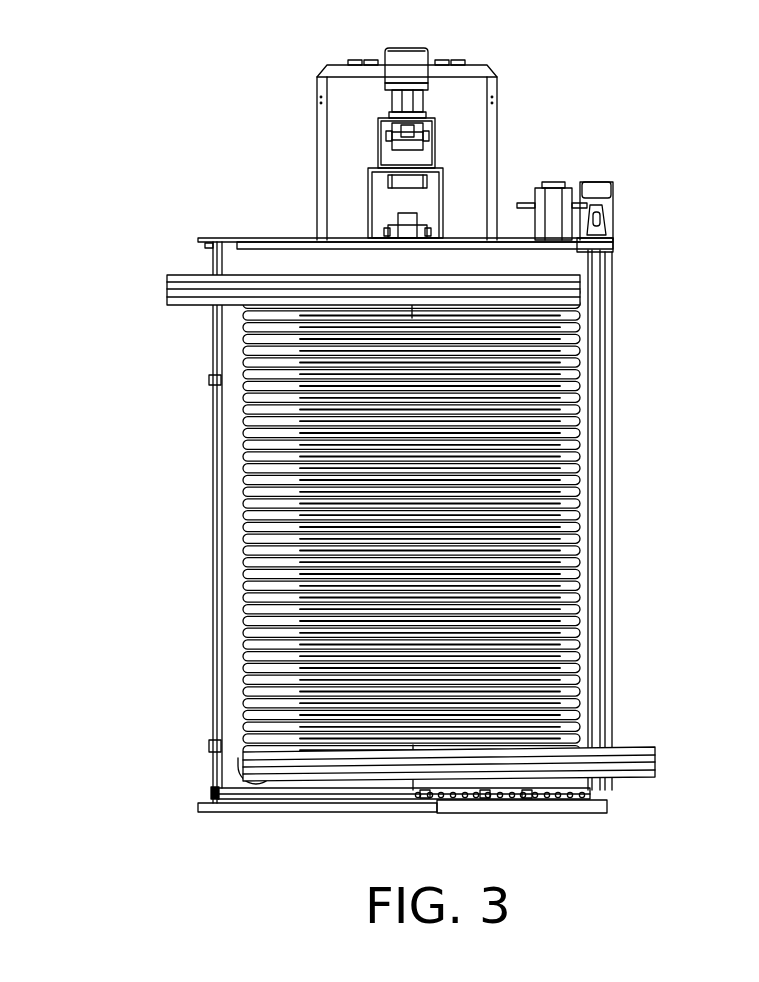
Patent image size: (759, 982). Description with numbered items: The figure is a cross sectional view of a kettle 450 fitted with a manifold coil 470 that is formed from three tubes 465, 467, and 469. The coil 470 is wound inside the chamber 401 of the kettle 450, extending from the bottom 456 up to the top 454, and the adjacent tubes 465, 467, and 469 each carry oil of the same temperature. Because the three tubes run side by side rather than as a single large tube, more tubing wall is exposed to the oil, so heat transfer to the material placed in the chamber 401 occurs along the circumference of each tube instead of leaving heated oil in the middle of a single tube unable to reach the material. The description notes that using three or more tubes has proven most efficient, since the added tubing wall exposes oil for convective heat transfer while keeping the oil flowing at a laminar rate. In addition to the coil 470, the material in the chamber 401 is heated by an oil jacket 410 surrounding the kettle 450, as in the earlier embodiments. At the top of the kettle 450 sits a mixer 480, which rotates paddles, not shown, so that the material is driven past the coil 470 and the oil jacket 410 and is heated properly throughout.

The chamber 401 is at (550, 268).
The oil jacket 410 is at (210, 633).
The kettle 450 is at (232, 208).
The top 454 is at (215, 258).
The bottom 456 is at (225, 770).
The tube 465 is at (647, 752).
The tube 467 is at (643, 762).
The tube 469 is at (645, 777).
The coil 470 is at (243, 582).
The mixer 480 is at (415, 49).